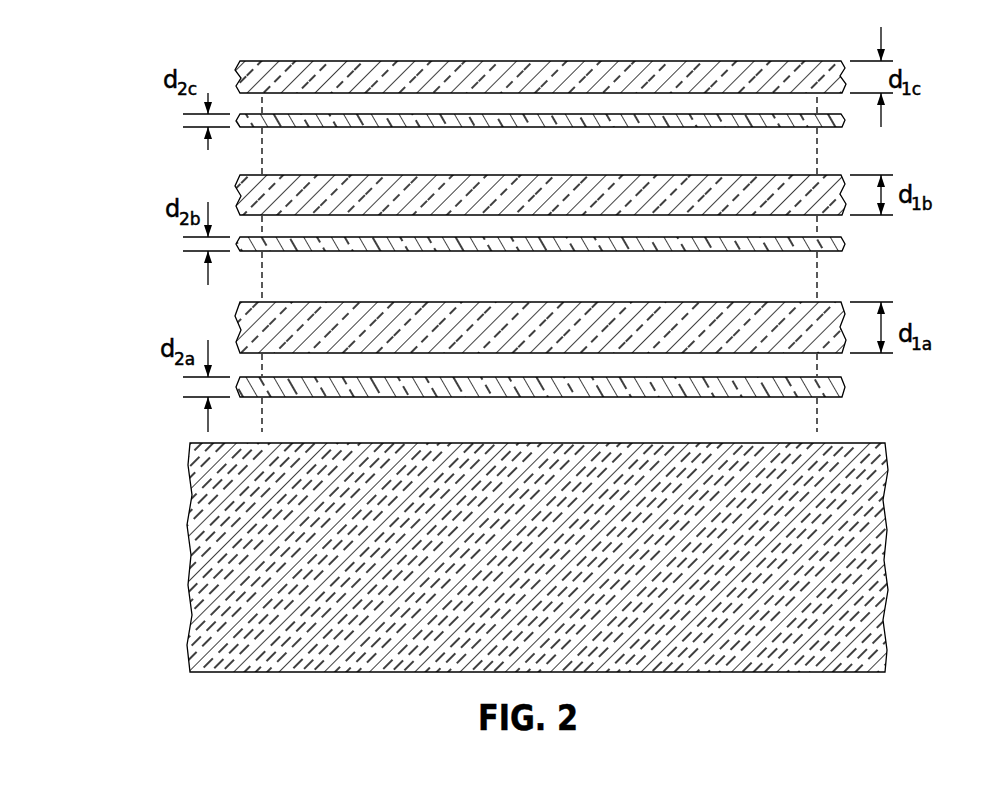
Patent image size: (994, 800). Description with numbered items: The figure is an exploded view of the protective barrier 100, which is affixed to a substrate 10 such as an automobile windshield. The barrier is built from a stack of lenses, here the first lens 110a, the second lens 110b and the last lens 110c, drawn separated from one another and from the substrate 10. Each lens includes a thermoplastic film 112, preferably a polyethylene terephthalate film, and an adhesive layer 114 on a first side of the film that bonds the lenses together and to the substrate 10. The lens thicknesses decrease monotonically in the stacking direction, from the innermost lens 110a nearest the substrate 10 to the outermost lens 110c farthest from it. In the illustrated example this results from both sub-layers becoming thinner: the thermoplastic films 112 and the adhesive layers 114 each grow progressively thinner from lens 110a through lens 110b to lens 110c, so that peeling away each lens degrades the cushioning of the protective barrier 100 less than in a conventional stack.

The substrate 10 is at (210, 531).
The protective barrier 100 is at (115, 48).
The first lens 110a is at (469, 349).
The second lens 110b is at (171, 175).
The last lens 110c is at (171, 58).
The thermoplastic film 112 is at (551, 301).
The adhesive layer 114 is at (572, 399).